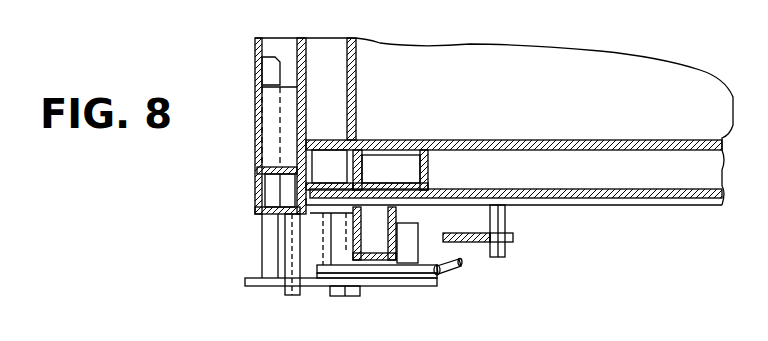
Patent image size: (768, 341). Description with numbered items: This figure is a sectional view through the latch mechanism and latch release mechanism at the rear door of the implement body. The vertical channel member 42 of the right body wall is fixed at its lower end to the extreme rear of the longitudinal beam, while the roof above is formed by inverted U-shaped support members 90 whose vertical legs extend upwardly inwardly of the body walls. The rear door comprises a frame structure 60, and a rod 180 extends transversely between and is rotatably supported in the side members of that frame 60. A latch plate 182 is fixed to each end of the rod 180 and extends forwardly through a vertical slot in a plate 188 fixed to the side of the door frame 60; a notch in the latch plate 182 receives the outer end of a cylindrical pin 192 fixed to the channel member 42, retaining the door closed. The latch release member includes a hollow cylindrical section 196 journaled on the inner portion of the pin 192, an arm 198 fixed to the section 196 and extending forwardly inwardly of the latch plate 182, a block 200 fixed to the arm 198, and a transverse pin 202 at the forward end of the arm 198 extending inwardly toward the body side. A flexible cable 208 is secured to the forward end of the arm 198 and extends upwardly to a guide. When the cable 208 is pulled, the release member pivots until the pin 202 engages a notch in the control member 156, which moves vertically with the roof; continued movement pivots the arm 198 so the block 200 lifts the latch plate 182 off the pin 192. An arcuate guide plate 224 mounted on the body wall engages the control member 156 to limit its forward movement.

The vertical channel member 42 is at (387, 238).
The frame structure 60 is at (270, 188).
The U-shaped support member 90 is at (428, 163).
The control member 156 is at (472, 242).
The rod 180 is at (270, 73).
The latch plate 182 is at (382, 281).
The plate 188 is at (292, 258).
The cylindrical pin 192 is at (324, 288).
The hollow cylindrical section 196 is at (323, 233).
The arm 198 is at (398, 276).
The block 200 is at (352, 297).
The transverse pin 202 is at (418, 238).
The flexible cable 208 is at (455, 268).
The arcuate guide plate 224 is at (505, 222).